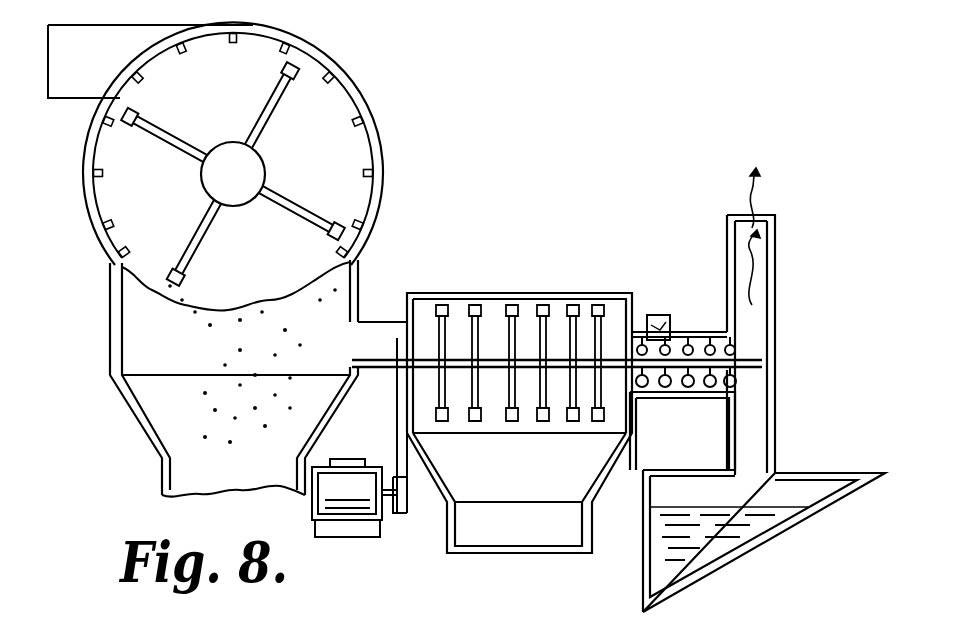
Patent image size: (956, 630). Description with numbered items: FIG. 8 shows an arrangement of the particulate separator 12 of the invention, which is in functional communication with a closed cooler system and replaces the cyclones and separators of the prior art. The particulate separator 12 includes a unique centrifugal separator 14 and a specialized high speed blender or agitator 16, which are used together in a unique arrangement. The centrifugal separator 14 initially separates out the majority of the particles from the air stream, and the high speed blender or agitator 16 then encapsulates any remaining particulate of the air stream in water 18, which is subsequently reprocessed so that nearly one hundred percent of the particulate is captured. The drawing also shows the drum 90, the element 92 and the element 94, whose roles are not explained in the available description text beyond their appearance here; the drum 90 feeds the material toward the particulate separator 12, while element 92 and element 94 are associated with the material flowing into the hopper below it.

The rotating drum 90 is at (235, 100).
The drum discharge / material flow 92 is at (278, 303).
The material feed arrow 94 is at (216, 348).
The particulate separator 12 is at (545, 272).
The centrifugal separator 14 is at (476, 290).
The high speed blender or agitator 16 is at (698, 330).
The water 18 is at (655, 314).